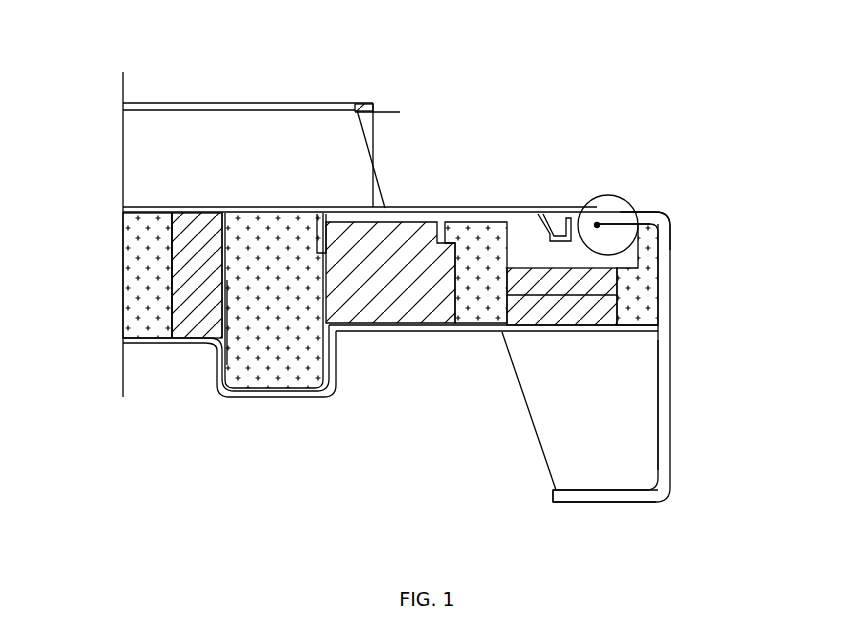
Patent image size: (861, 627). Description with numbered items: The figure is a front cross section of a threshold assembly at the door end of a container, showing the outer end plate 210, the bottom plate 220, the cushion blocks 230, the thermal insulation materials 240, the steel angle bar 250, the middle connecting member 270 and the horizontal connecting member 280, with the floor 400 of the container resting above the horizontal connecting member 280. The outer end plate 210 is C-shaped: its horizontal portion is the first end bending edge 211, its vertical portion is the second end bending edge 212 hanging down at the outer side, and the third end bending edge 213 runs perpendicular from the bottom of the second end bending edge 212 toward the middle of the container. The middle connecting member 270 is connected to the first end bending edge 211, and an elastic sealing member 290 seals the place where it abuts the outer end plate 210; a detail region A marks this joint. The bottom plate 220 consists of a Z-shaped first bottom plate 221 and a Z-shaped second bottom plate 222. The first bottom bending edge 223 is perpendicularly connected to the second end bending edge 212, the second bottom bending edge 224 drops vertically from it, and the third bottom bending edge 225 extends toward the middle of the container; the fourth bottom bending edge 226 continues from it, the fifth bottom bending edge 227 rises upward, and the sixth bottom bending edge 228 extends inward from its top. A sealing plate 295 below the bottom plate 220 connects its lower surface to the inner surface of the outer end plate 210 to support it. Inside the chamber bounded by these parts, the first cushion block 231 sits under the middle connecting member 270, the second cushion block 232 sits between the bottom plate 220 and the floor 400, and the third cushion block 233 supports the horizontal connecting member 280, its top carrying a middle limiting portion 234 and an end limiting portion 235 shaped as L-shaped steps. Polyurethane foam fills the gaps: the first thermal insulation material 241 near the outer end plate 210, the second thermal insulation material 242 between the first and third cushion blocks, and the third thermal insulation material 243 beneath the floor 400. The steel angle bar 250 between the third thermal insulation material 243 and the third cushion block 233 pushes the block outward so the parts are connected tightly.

The floor 400 is at (247, 80).
The cushion block 230 is at (407, 47).
The first cushion block 231 is at (537, 298).
The second cushion block 232 is at (172, 245).
The third cushion block 233 is at (374, 215).
The horizontal connecting member 280 is at (487, 213).
The elastic sealing member 290 is at (553, 212).
The middle connecting member 270 is at (567, 212).
The detail region A is at (627, 200).
The first end bending edge 211 is at (640, 212).
The outer end plate 210 is at (766, 342).
The second end bending edge 212 is at (672, 348).
The third end bending edge 213 is at (598, 495).
The sealing plate 295 is at (612, 437).
The second bottom plate 222 is at (140, 342).
The end limiting portion 235 is at (317, 226).
The sixth bottom bending edge 228 is at (148, 345).
The fifth bottom bending edge 227 is at (220, 365).
The third bottom bending edge 225 is at (289, 400).
The fourth bottom bending edge 226 is at (240, 397).
The second bottom bending edge 224 is at (335, 360).
The steel angle bar 250 is at (322, 352).
The first bottom bending edge 223 is at (362, 318).
The first bottom plate 221 is at (410, 328).
The middle limiting portion 234 is at (445, 243).
The first thermal insulation material 241 is at (633, 310).
The second thermal insulation material 242 is at (482, 293).
The third thermal insulation material 243 is at (272, 357).
The thermal insulation material 240 is at (515, 535).
The bottom plate 220 is at (261, 474).